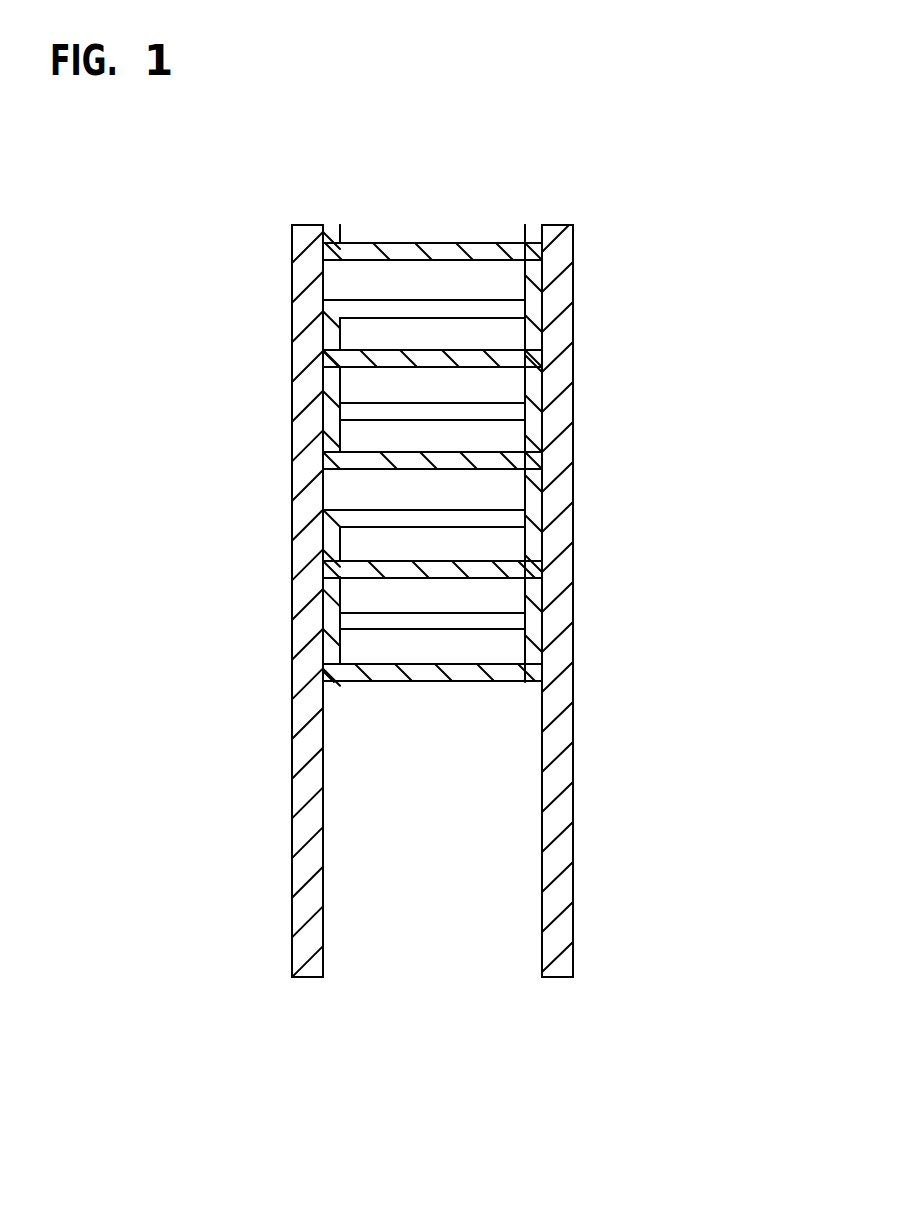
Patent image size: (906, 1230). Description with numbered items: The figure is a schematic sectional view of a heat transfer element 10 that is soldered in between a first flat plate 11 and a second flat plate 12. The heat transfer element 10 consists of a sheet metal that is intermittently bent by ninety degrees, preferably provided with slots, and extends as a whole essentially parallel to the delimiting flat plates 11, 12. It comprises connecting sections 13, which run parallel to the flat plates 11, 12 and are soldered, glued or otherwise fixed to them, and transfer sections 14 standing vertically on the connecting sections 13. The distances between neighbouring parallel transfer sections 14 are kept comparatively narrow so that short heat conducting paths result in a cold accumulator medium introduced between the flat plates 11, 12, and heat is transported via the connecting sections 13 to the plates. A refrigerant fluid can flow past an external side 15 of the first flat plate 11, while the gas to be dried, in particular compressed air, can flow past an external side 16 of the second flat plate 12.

The heat transfer element 10 is at (440, 242).
The first flat plate 11 is at (290, 323).
The second flat plate 12 is at (573, 275).
The connecting sections 13 is at (540, 325).
The transfer sections 14 is at (493, 372).
The external side of the first flat plate 15 is at (292, 912).
The external side of the second flat plate 16 is at (560, 890).